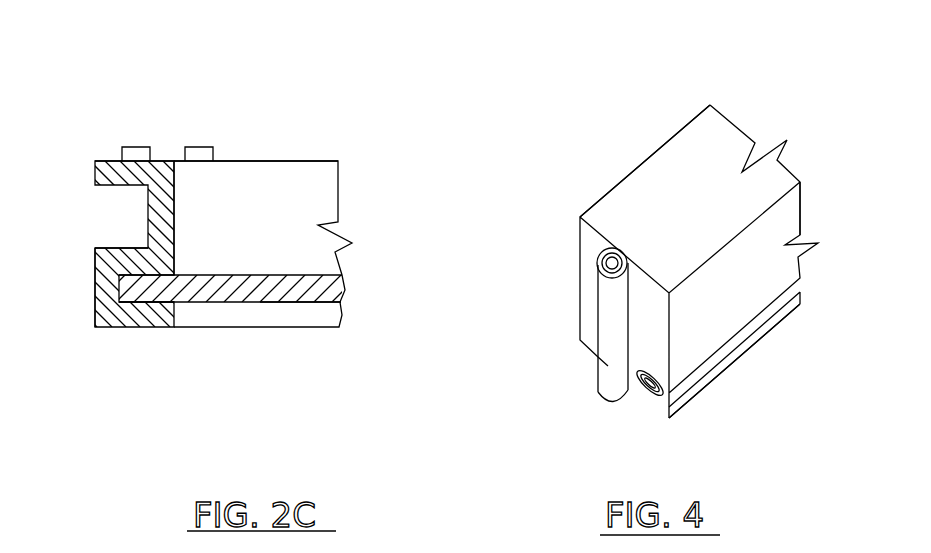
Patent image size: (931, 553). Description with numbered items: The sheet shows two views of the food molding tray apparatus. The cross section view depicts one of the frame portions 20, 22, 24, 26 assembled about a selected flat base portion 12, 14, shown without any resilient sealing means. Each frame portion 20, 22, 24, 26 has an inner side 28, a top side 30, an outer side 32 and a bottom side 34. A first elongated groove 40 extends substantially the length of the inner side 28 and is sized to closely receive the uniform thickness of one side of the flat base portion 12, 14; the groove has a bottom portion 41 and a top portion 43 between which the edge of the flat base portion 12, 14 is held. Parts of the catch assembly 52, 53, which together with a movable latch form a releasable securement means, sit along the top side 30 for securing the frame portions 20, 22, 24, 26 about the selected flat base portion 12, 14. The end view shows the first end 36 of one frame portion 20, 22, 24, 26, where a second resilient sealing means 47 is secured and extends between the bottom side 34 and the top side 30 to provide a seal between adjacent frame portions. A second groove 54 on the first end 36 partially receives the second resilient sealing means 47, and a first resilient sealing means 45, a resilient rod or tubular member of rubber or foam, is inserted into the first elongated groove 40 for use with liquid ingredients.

In FIG. 2C, the flat base portion 12 is at (348, 353).
In FIG. 2C, the flat base portion 14 is at (290, 304).
In FIG. 2C, the frame portion 20 is at (284, 89).
In FIG. 2C, the frame portion 22 is at (284, 89).
In FIG. 2C, the frame portion 24 is at (284, 89).
In FIG. 2C, the frame portion 26 is at (97, 150).
In FIG. 2C, the inner side 28 is at (177, 215).
In FIG. 4, the inner side 28 is at (763, 242).
In FIG. 2C, the top side 30 is at (112, 158).
In FIG. 4, the top side 30 is at (670, 183).
In FIG. 4, the outer side 32 is at (600, 188).
In FIG. 2C, the bottom side 34 is at (153, 329).
In FIG. 4, the bottom side 34 is at (723, 378).
In FIG. 4, the first end 36 is at (592, 284).
In FIG. 2C, the first elongated groove 40 is at (250, 304).
In FIG. 4, the first elongated groove 40 is at (762, 338).
In FIG. 2C, the bottom portion 41 is at (135, 304).
In FIG. 2C, the top portion 43 is at (135, 266).
In FIG. 4, the first resilient sealing means 45 is at (640, 396).
In FIG. 4, the second resilient sealing means 47 is at (597, 325).
In FIG. 2C, the catch assembly 52 is at (133, 140).
In FIG. 2C, the catch assembly 53 is at (199, 140).
In FIG. 4, the second groove 54 is at (632, 263).